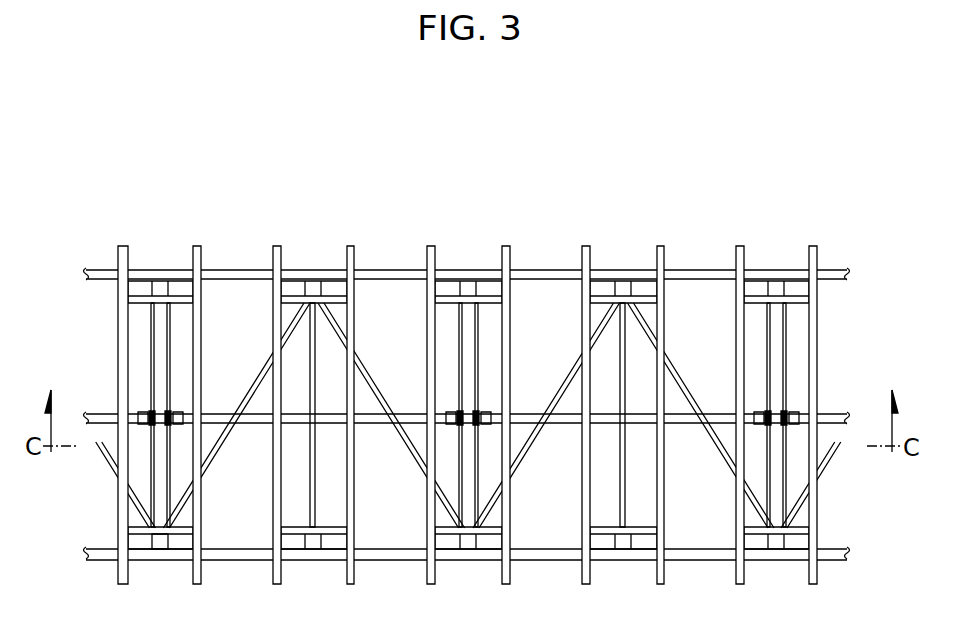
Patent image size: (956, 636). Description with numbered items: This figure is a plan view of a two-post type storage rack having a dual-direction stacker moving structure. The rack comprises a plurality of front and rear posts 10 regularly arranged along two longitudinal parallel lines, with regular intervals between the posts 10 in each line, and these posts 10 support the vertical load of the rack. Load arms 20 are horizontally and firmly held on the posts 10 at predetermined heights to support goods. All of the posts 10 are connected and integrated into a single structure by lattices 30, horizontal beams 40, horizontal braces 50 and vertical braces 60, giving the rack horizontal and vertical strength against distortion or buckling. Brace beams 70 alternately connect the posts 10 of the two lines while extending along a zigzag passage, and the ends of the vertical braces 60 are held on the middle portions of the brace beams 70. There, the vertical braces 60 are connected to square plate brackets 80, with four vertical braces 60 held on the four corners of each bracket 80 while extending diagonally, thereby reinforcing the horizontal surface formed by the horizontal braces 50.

The front and rear posts 10 is at (161, 549).
The load arms 20 is at (201, 522).
The lattices 30 is at (315, 496).
The horizontal beams 40 is at (401, 557).
The horizontal braces 50 is at (509, 478).
The vertical braces 60 is at (570, 424).
The brace beams 70 is at (766, 485).
The brackets 80 is at (772, 424).